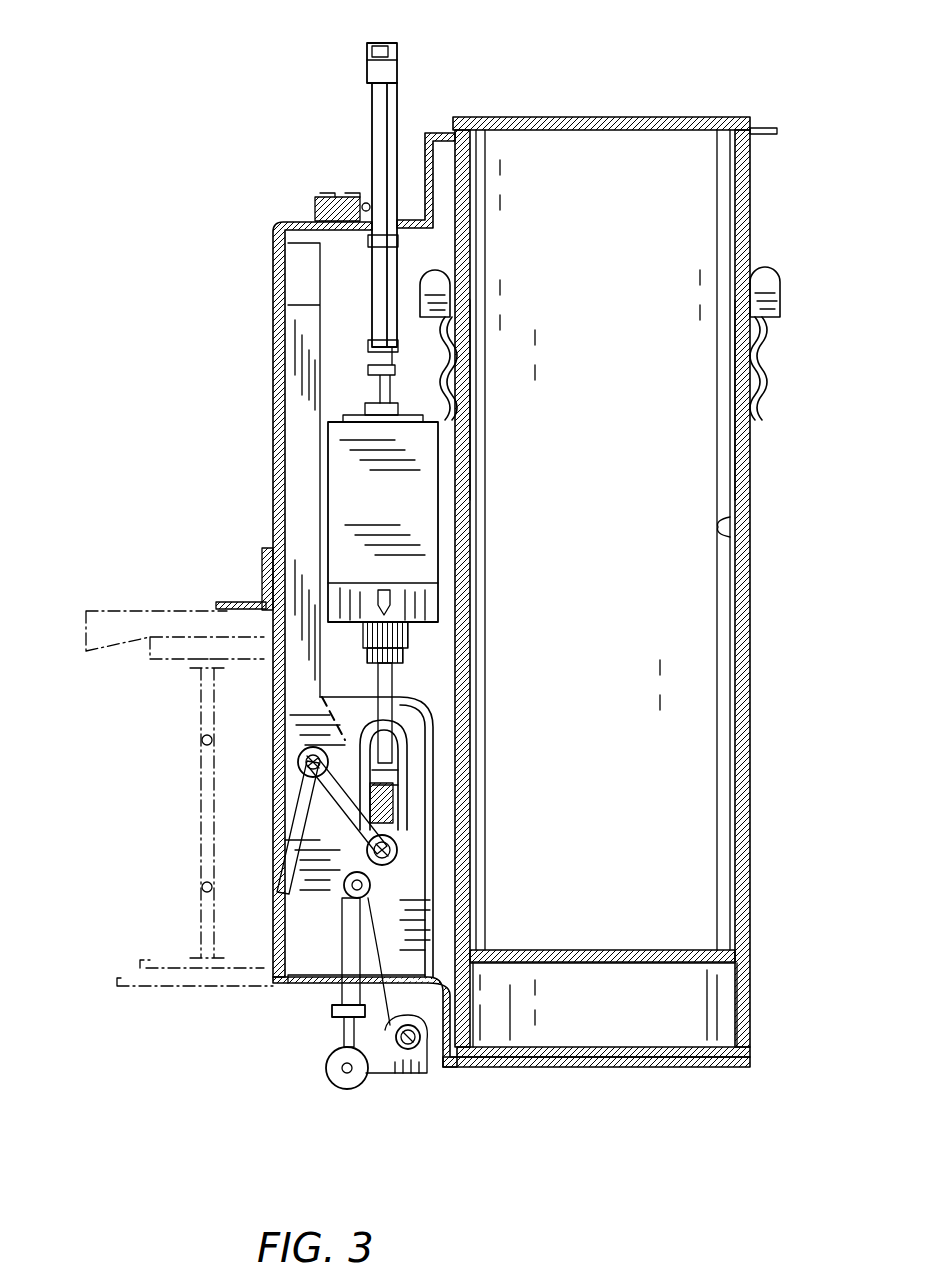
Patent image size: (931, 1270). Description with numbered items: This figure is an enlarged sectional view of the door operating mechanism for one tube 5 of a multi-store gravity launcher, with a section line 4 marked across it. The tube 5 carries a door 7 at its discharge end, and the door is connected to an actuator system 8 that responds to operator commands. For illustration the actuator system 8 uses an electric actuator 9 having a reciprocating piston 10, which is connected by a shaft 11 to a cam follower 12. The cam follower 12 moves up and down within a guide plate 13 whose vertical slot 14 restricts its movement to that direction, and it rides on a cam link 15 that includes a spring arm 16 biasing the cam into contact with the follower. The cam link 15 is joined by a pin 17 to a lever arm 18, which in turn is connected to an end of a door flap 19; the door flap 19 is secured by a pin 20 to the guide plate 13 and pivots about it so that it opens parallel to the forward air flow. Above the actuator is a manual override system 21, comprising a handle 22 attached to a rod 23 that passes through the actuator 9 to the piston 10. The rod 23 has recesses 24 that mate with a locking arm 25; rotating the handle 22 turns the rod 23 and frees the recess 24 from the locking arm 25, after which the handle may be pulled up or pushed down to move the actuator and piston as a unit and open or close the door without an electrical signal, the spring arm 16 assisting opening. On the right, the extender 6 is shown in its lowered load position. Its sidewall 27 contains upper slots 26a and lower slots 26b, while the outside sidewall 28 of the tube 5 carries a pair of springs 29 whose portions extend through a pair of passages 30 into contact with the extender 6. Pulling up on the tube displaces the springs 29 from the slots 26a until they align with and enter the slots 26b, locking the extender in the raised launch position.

The section line 4- 4 is at (297, 0).
The tube 5 is at (745, 1022).
The extender 6 is at (750, 204).
The door 7 is at (548, 1075).
The actuator system 8 is at (243, 443).
The electric actuator 9 is at (340, 507).
The reciprocating piston 10 is at (367, 633).
The shaft 11 is at (393, 676).
The cam follower 12 is at (397, 851).
The guide plate 13 is at (412, 904).
The vertical slot 14 is at (395, 810).
The cam link 15 is at (340, 822).
The spring arm 16 is at (303, 800).
The pin 17 is at (337, 899).
The lever arm 18 is at (338, 993).
The door flap 19 is at (380, 1085).
The pin 20 is at (417, 1082).
The manual override system 21 is at (280, 153).
The handle 22 is at (397, 53).
The rod 23 is at (397, 108).
The recesses 24 is at (370, 343).
The locking arm 25 is at (366, 198).
The upper slots 26a is at (737, 341).
The lower slots 26b is at (737, 921).
The sidewall 27 is at (752, 546).
The outside sidewall 28 is at (752, 474).
The springs 29 is at (775, 397).
The passages 30 is at (470, 363).